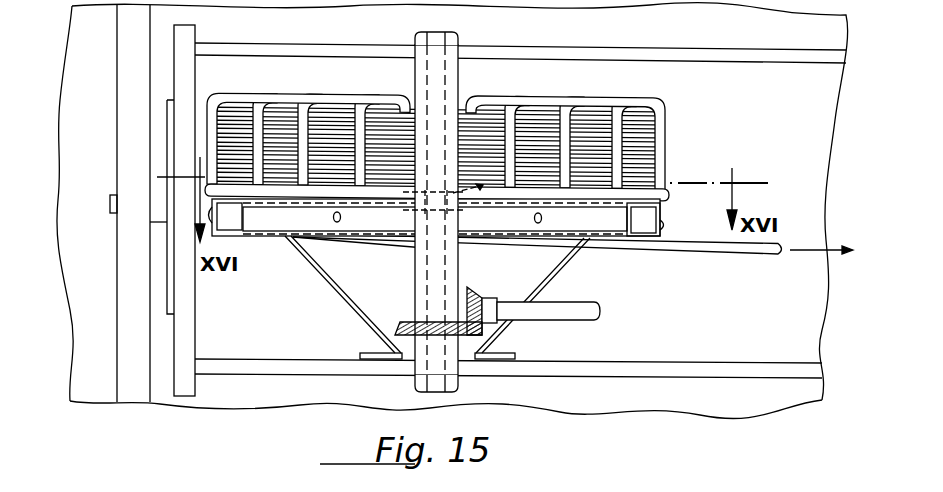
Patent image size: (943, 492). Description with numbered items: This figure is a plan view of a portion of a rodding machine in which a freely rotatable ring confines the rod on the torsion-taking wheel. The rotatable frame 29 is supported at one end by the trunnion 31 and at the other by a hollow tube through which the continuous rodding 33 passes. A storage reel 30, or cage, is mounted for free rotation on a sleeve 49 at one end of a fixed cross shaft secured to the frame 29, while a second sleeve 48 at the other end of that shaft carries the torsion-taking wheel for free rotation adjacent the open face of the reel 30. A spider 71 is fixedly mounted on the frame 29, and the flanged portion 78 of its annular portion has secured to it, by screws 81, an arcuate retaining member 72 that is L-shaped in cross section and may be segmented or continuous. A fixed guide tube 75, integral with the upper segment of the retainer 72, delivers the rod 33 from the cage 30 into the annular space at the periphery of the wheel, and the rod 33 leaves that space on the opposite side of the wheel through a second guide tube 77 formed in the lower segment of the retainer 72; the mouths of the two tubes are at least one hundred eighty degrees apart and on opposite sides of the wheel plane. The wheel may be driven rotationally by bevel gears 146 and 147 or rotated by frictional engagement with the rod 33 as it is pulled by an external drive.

The frame 29 is at (577, 52).
The storage reel 30 is at (658, 110).
The trunnion 31 is at (109, 198).
The continuous rodding 33 is at (647, 147).
The second sleeve 48 is at (421, 288).
The sleeve 49 is at (456, 79).
The spider 71 is at (333, 290).
The arcuate retaining member 72 is at (265, 249).
The guide tube 75 is at (463, 207).
The guide tube 77 is at (403, 248).
The flanged portion 78 is at (642, 220).
The screws 81 is at (536, 223).
The bevel gear 146 is at (473, 293).
The bevel gear 147 is at (398, 326).